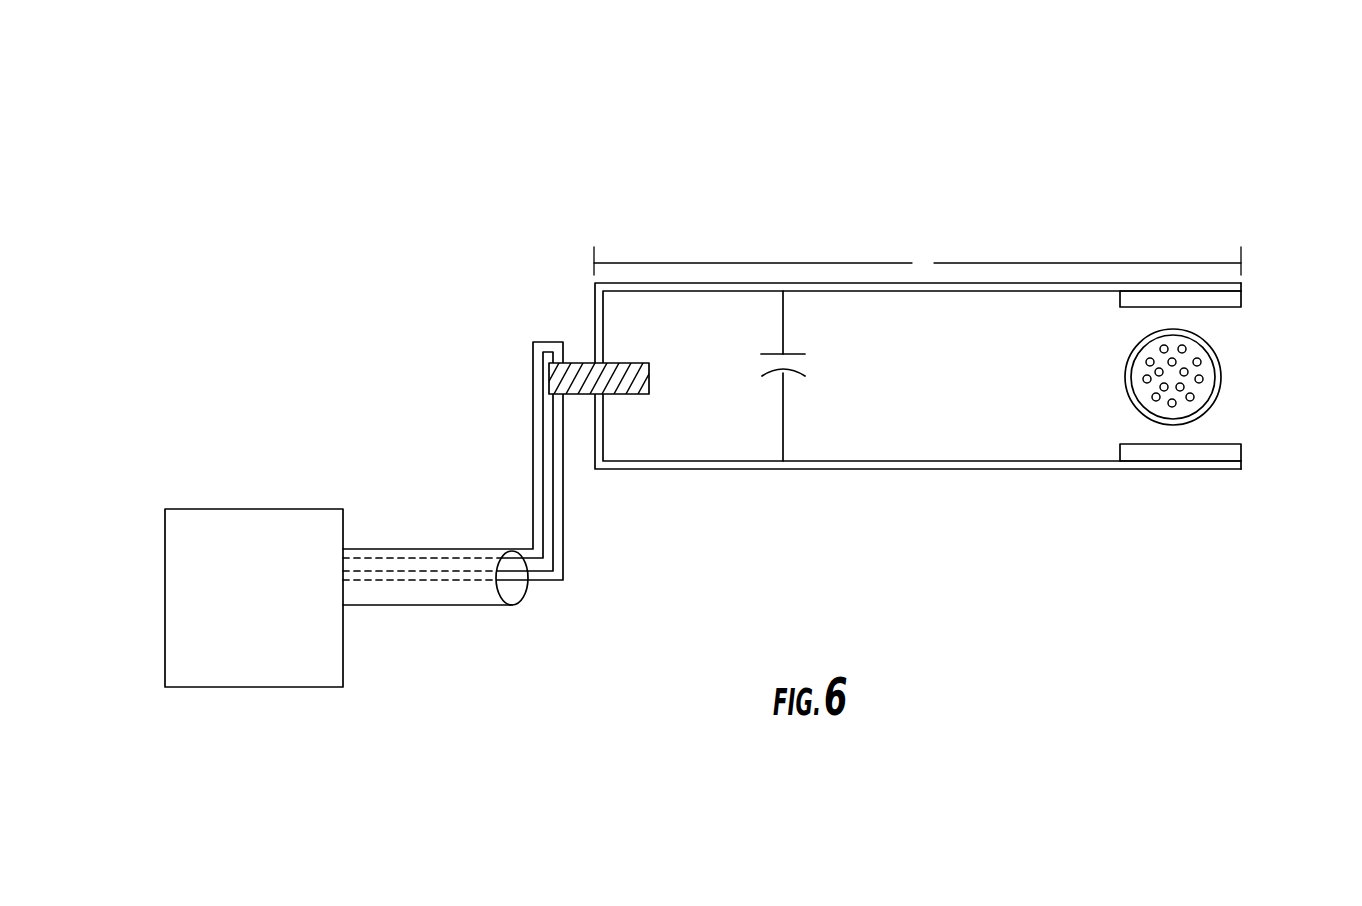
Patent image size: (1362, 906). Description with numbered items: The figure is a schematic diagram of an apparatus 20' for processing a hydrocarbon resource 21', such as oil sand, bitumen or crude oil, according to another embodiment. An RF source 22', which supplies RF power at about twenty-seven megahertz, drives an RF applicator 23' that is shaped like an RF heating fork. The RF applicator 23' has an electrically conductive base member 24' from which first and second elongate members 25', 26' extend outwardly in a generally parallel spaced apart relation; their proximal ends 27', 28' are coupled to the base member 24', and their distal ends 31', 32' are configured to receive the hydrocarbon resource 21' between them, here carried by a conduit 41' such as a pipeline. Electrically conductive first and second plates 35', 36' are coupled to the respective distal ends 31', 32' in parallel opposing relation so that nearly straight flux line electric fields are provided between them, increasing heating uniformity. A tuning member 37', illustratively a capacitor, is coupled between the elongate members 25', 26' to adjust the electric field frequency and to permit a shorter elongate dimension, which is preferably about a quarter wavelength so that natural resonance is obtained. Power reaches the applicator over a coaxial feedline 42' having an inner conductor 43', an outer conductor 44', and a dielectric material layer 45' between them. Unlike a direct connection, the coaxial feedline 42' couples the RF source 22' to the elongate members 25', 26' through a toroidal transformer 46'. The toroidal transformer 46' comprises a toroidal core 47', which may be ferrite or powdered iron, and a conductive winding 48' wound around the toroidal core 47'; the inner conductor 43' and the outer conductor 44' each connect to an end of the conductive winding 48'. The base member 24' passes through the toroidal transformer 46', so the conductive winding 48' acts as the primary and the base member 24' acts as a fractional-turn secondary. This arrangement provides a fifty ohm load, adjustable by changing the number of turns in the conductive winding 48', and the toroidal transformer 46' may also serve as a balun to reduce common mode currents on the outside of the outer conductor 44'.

The apparatus 20' is at (293, 110).
The hydrocarbon resource 21' is at (1241, 375).
The RF source 22' is at (210, 568).
The RF applicator 23' is at (917, 215).
The base member 24' is at (842, 360).
The first elongate member 25' is at (1179, 355).
The second elongate member 26' is at (980, 492).
The proximal end 27' is at (850, 330).
The proximal end 28' is at (675, 523).
The distal end 31' is at (1200, 245).
The distal end 32' is at (1227, 504).
The first plate 35' is at (1222, 307).
The second plate 36' is at (1234, 439).
The tuning member 37' is at (805, 418).
The conduit 41' is at (1235, 377).
The coaxial feedline 42' is at (453, 644).
The inner conductor 43' is at (517, 518).
The outer conductor 44' is at (380, 446).
The dielectric material layer 45' is at (441, 513).
The toroidal transformer 46' is at (598, 296).
The toroidal core 47' is at (658, 305).
The conductive winding 48' is at (690, 457).